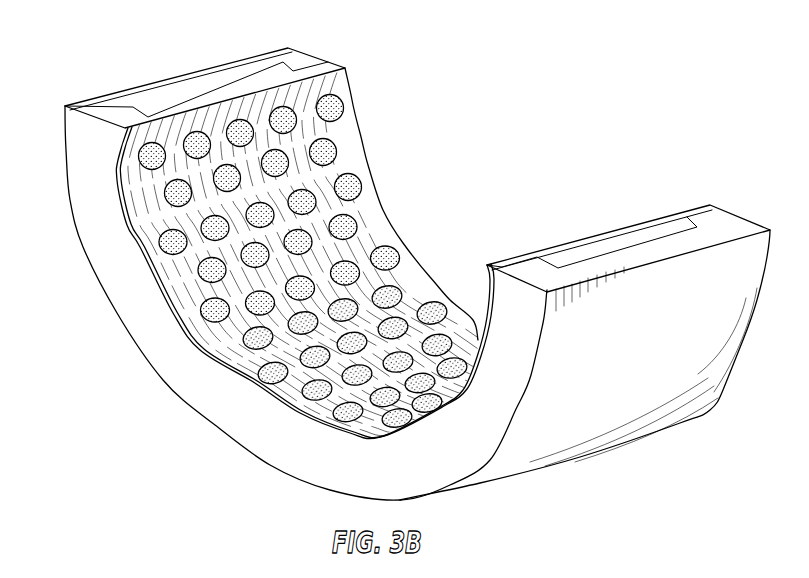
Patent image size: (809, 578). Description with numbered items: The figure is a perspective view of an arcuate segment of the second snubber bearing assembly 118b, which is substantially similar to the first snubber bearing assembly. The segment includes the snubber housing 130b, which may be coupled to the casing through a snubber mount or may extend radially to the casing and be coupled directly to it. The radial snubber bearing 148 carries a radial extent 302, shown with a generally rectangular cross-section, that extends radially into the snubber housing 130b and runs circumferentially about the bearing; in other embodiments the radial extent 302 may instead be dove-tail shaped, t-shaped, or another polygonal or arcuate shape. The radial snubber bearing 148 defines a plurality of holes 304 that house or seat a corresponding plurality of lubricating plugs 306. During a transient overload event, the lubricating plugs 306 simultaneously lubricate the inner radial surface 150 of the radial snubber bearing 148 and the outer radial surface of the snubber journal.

The second snubber bearing assembly 118b is at (572, 100).
The snubber housing 130b is at (97, 100).
The radial extent 302 is at (272, 80).
The lubricating plugs 306 is at (282, 118).
The holes 304 is at (395, 252).
The inner radial surface 150 is at (350, 142).
The radial snubber bearing 148 is at (662, 226).